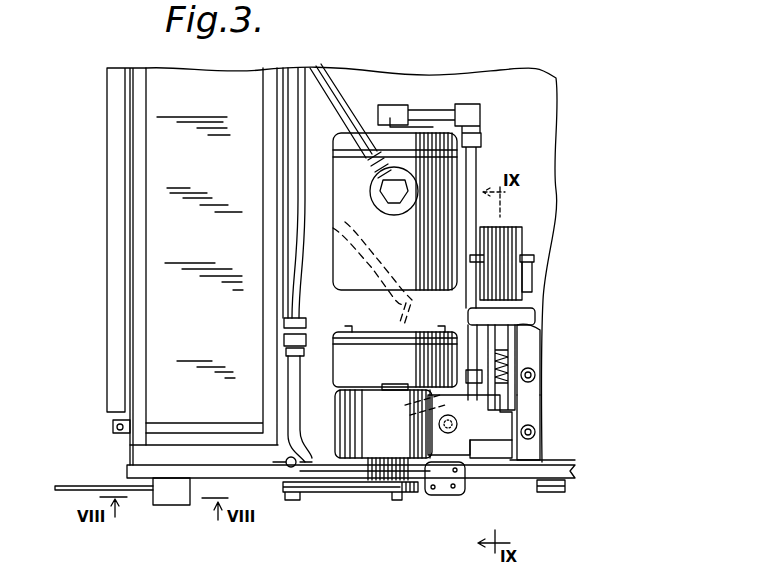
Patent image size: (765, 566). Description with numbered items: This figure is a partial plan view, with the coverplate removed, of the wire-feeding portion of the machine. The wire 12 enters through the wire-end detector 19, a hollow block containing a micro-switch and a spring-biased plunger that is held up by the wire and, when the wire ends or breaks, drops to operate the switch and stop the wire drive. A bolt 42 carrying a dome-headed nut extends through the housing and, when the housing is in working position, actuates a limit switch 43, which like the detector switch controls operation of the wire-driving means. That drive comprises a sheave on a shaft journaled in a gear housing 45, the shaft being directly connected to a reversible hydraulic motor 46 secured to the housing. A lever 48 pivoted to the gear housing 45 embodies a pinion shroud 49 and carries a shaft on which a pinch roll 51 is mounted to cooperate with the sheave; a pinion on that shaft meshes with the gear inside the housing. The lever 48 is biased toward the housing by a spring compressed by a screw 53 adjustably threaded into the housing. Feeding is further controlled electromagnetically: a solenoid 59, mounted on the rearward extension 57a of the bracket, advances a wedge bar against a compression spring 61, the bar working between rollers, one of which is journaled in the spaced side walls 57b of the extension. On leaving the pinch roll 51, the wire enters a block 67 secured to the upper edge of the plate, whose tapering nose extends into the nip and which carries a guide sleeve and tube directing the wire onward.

The wire 12 is at (68, 488).
The wire-end detector 19 is at (170, 505).
The bolt 42 is at (280, 470).
The limit switch 43 is at (296, 458).
The gear housing 45 is at (367, 381).
The reversible hydraulic motor 46 is at (387, 252).
The lever 48 is at (487, 434).
The pinion shroud 49 is at (392, 439).
The pinch roll 51 is at (416, 480).
The screw 53 is at (468, 448).
The rearward extension of bracket 57a is at (518, 342).
The spaced side walls 57b is at (513, 388).
The solenoid 59 is at (520, 272).
The compression spring 61 is at (510, 363).
The block 67 is at (447, 493).